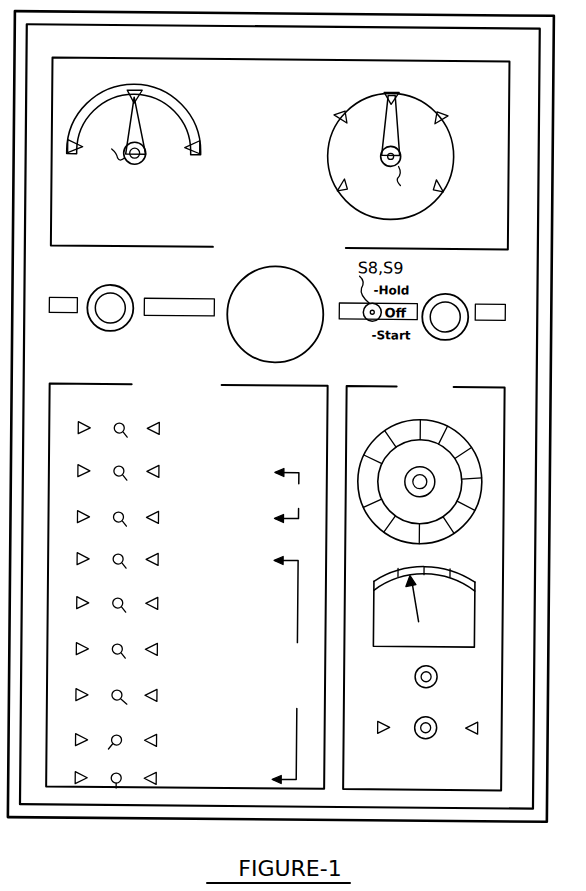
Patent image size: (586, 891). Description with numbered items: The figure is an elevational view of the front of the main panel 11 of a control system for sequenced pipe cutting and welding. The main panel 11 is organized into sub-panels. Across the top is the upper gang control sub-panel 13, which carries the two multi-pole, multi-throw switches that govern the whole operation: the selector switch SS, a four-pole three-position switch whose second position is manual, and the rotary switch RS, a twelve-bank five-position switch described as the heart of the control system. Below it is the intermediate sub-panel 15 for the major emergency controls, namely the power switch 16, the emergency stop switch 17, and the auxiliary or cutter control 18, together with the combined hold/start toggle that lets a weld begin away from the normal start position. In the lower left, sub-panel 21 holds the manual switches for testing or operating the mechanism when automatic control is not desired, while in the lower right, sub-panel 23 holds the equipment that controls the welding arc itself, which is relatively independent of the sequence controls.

The main panel 11 is at (536, 351).
The upper gang control sub-panel 13 is at (511, 179).
The intermediate sub-panel 15 is at (513, 283).
The power switch 16 is at (128, 293).
The emergency stop switch 17 is at (321, 299).
The auxiliary or cutter control 18 is at (455, 298).
The lower left sub-panel 21 is at (53, 480).
The lower right sub-panel 23 is at (507, 631).